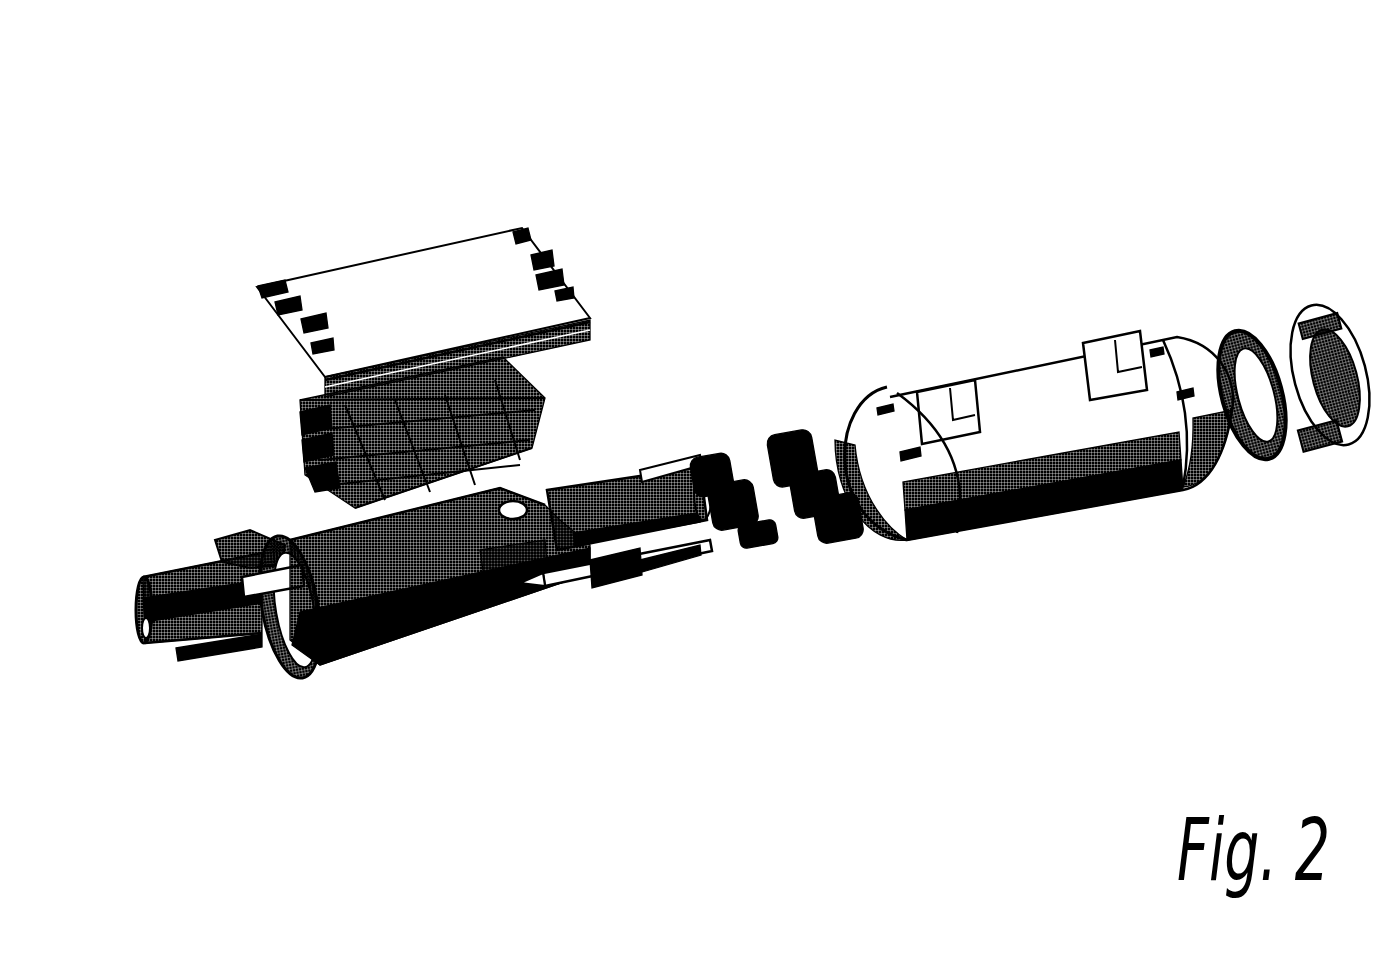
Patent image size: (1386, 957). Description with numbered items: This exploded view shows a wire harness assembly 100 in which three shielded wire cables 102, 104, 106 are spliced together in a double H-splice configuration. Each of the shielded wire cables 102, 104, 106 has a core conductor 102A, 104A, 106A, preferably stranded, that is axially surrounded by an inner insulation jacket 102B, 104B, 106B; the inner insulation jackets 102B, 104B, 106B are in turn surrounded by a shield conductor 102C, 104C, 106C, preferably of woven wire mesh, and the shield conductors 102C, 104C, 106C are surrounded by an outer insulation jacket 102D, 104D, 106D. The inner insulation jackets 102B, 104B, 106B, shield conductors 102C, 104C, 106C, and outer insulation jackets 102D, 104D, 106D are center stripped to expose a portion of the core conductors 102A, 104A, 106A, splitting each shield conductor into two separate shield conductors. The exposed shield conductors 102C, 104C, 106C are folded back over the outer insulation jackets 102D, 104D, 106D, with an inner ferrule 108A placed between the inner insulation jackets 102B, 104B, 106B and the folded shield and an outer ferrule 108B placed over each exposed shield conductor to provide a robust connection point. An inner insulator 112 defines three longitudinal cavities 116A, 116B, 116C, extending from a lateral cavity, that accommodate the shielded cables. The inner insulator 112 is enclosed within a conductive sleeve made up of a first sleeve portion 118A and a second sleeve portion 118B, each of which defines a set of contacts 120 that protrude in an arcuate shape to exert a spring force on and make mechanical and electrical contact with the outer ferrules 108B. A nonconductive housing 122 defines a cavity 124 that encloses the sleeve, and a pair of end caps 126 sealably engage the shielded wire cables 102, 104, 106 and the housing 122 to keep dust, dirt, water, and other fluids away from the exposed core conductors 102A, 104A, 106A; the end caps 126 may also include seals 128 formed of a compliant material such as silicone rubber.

The wire harness assembly 100 is at (717, 125).
The shielded wire cable 102 is at (181, 618).
The core conductor 102A is at (363, 553).
The inner insulation jacket 102B is at (477, 527).
The shield conductor 102C is at (518, 503).
The outer insulation jacket 102D is at (653, 483).
The shielded wire cable 104 is at (167, 632).
The core conductor 104A is at (423, 573).
The inner insulation jacket 104B is at (583, 580).
The shield conductor 104C is at (537, 537).
The outer insulation jacket 104D is at (647, 527).
The shielded wire cable 106 is at (235, 650).
The core conductor 106A is at (443, 597).
The inner insulation jacket 106B is at (492, 553).
The shield conductor 106C is at (588, 580).
The outer insulation jacket 106D is at (677, 557).
The inner ferrule 108A is at (768, 560).
The outer ferrule 108B is at (785, 405).
The inner insulator 112 is at (339, 432).
The longitudinal cavity 116A is at (300, 425).
The longitudinal cavity 116B is at (320, 455).
The longitudinal cavity 116C is at (340, 495).
The first sleeve portion 118A is at (354, 297).
The second sleeve portion 118B is at (352, 635).
The contacts 120 is at (308, 342).
The housing 122 is at (1033, 417).
The cavity 124 is at (873, 467).
The end caps 126 is at (293, 683).
The seals 128 is at (1233, 327).